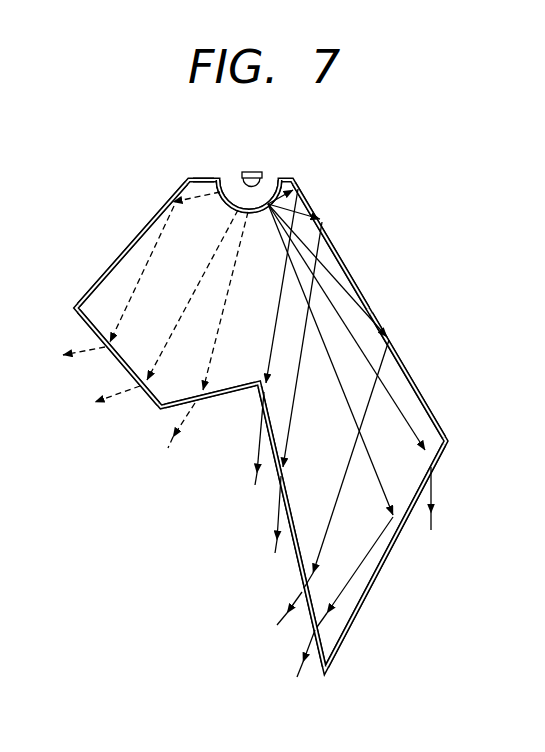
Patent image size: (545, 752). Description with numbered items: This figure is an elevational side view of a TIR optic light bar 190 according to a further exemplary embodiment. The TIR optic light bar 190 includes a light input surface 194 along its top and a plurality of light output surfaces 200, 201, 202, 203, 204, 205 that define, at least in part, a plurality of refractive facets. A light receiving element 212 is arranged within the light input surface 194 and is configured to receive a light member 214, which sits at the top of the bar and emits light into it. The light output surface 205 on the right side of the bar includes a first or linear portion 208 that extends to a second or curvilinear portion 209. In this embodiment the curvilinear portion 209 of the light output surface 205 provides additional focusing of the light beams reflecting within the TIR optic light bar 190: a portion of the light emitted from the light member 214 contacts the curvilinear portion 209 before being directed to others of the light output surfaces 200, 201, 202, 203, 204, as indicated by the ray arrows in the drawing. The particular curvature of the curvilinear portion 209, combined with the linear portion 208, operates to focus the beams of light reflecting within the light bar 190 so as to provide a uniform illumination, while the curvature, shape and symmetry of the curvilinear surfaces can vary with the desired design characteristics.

The TIR optic light bar 190 is at (400, 655).
The light input surface 194 is at (200, 178).
The light output surface 200 is at (133, 243).
The light output surface 201 is at (118, 367).
The light output surface 202 is at (222, 395).
The light output surface 203 is at (300, 566).
The light output surface 204 is at (380, 567).
The light output surface 205 is at (422, 310).
The linear portion 208 is at (428, 398).
The curvilinear portion 209 is at (313, 203).
The light receiving element 212 is at (268, 190).
The light member 214 is at (251, 172).